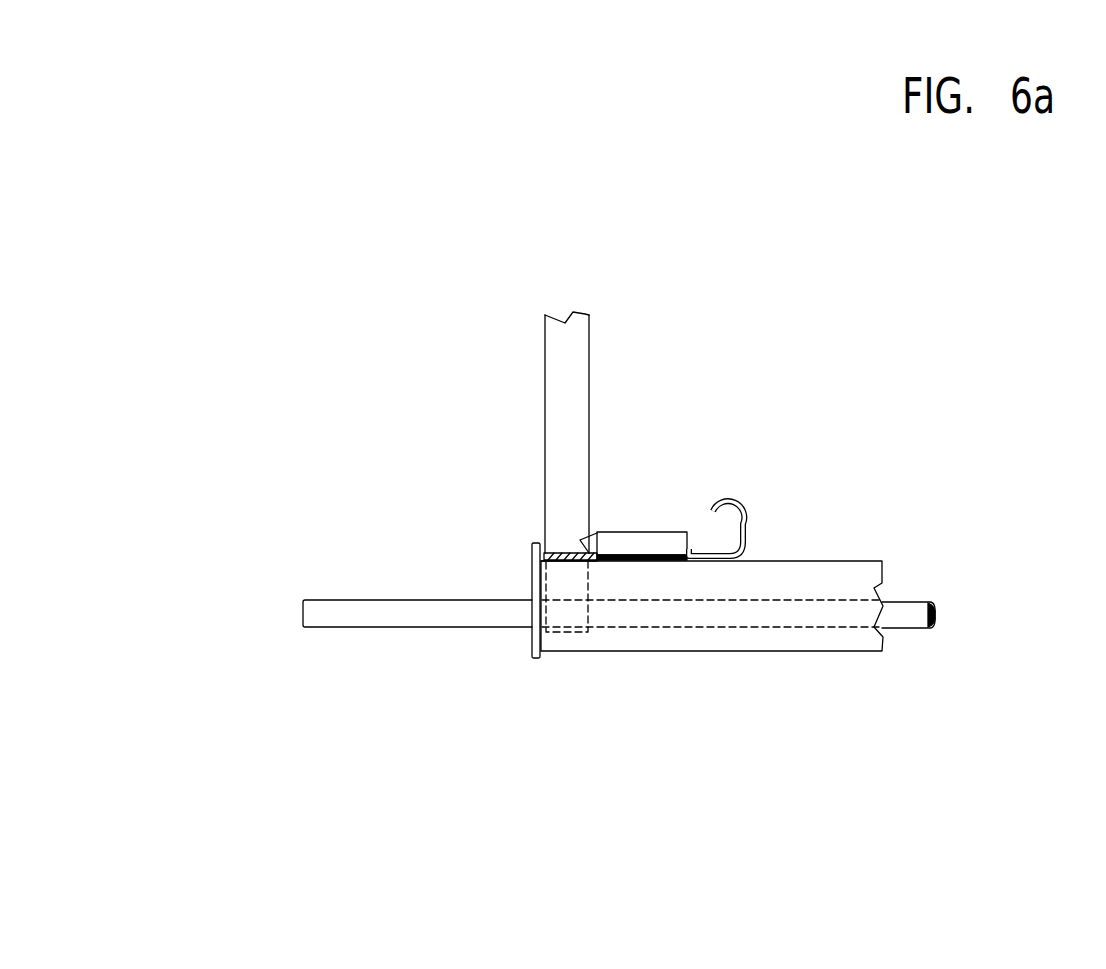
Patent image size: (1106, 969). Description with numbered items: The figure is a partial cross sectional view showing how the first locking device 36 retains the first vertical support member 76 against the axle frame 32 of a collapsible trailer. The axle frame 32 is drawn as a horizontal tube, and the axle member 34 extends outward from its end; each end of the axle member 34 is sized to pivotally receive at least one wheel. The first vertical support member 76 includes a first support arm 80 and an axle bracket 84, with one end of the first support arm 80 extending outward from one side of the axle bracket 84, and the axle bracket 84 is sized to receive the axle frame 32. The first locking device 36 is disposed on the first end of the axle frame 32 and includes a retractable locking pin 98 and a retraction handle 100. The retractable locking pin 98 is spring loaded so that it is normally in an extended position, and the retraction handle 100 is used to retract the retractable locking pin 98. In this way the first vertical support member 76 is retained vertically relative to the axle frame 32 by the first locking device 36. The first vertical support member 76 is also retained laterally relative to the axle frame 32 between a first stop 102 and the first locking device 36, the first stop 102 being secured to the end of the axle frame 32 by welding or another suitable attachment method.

The axle frame 32 is at (805, 640).
The axle member 34 is at (342, 598).
The first locking device 36 is at (657, 542).
The first vertical support member 76 is at (622, 350).
The first support arm 80 is at (562, 405).
The axle bracket 84 is at (567, 558).
The retractable locking pin 98 is at (582, 539).
The retraction handle 100 is at (745, 518).
The first stop 102 is at (530, 642).